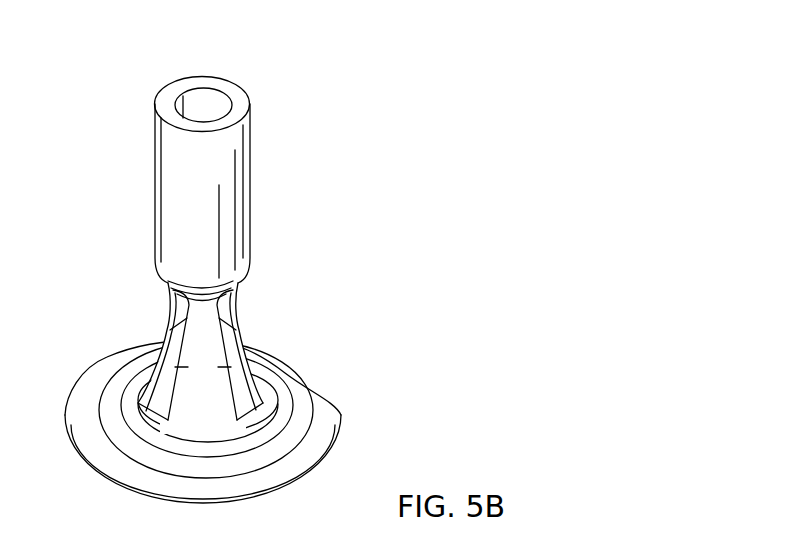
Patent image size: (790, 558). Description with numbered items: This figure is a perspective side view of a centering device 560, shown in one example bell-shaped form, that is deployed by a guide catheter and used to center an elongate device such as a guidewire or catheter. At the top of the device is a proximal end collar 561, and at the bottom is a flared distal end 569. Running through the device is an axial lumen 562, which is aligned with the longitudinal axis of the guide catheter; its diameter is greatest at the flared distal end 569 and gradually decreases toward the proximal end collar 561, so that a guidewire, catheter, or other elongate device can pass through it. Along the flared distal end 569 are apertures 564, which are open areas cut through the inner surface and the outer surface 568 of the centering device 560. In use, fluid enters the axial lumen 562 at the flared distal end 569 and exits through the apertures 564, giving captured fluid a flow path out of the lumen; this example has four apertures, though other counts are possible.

The centering device 560 is at (226, 268).
The proximal end collar 561 is at (157, 196).
The axial lumen 562 is at (175, 96).
The apertures 564 is at (243, 407).
The outer surface 568 is at (157, 475).
The flared distal end 569 is at (271, 494).